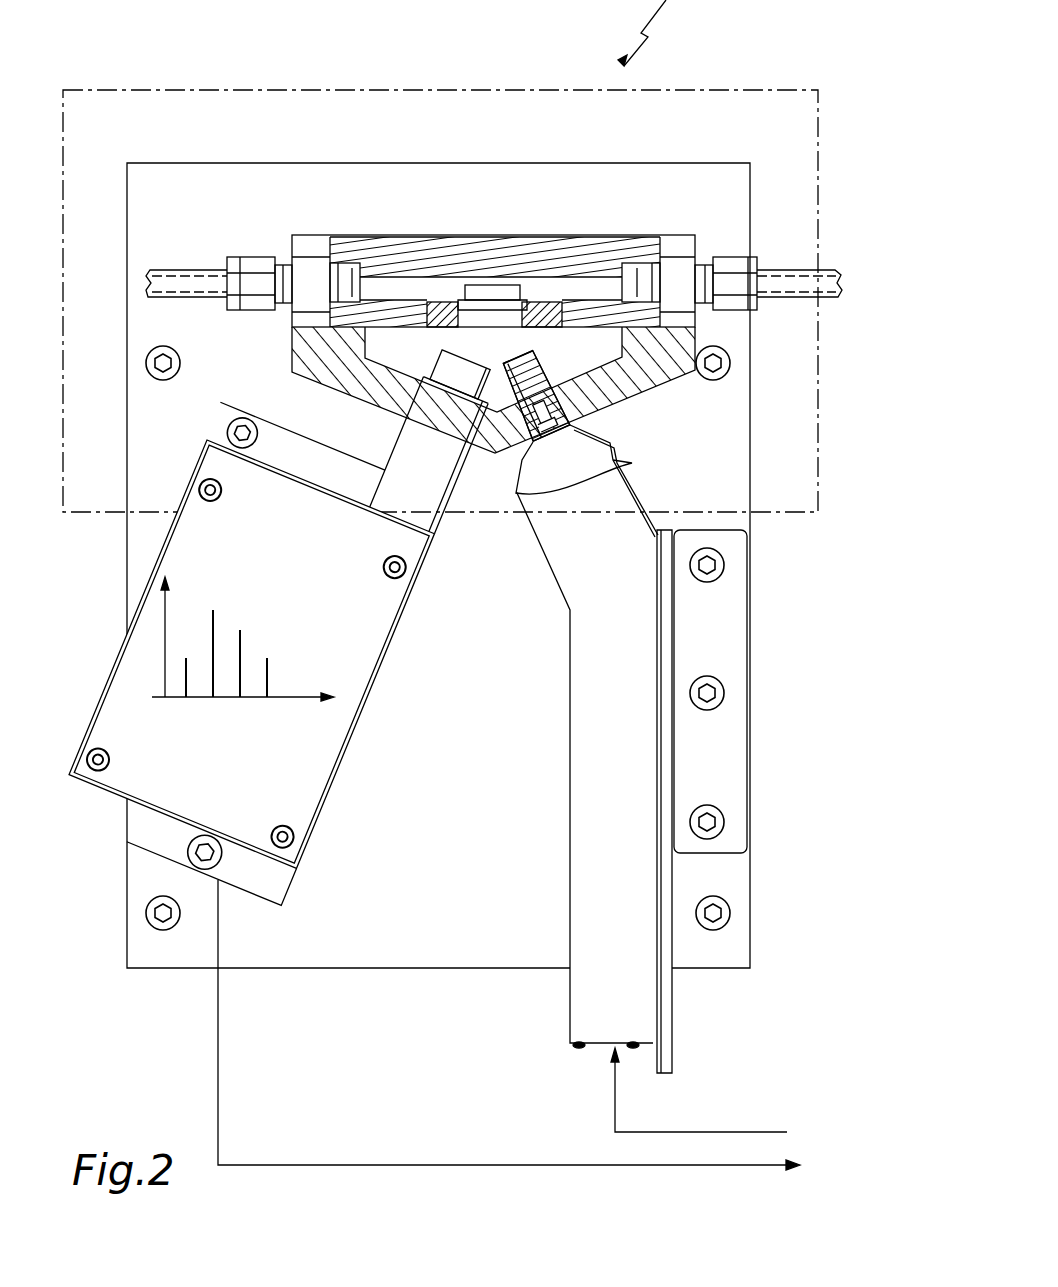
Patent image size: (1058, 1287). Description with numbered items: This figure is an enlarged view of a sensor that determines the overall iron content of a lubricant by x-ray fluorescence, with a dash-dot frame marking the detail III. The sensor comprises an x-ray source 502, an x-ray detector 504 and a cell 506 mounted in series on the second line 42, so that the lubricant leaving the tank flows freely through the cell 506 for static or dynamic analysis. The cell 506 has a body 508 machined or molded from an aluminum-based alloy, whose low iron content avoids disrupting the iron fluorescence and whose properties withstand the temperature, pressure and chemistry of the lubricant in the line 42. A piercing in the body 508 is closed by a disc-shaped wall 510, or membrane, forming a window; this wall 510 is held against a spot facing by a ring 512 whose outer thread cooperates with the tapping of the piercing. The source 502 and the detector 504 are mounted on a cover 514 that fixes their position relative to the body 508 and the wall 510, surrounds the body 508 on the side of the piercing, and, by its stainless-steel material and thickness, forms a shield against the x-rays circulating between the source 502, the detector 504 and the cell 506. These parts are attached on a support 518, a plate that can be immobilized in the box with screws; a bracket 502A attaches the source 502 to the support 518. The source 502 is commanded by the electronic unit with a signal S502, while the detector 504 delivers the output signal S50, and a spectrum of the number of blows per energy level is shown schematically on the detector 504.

The second line 42 is at (836, 276).
The x-ray source 502 is at (586, 711).
The bracket 502A is at (724, 749).
The x-ray detector 504 is at (276, 592).
The cell 506 is at (492, 241).
The body 508 is at (396, 258).
The disc-shaped wall 510 is at (518, 283).
The ring 512 is at (440, 318).
The cover 514 is at (640, 398).
The support 518 is at (438, 565).
The command signal S502 is at (673, 1090).
The output signal S50 is at (534, 1073).
The detail section boundary III is at (733, 90).